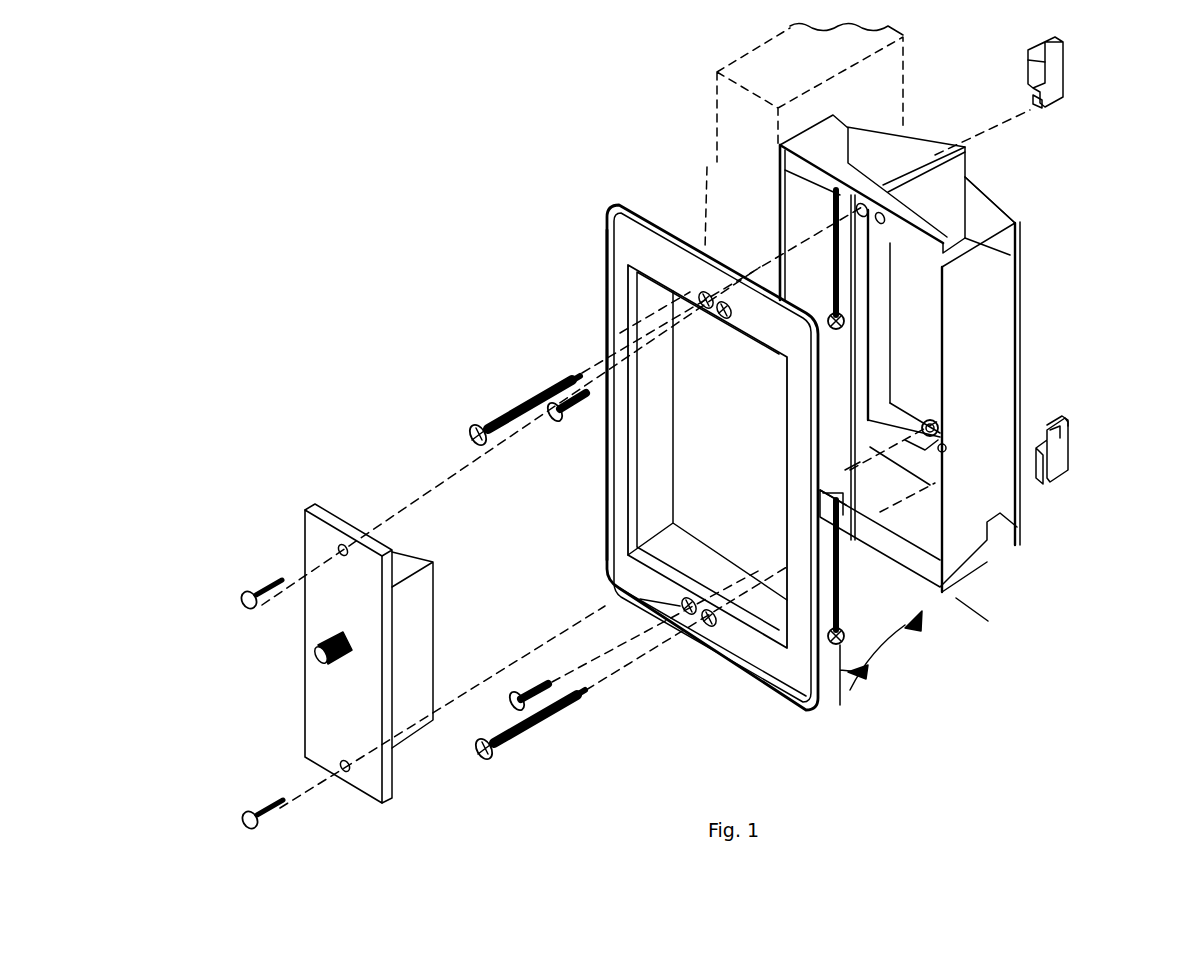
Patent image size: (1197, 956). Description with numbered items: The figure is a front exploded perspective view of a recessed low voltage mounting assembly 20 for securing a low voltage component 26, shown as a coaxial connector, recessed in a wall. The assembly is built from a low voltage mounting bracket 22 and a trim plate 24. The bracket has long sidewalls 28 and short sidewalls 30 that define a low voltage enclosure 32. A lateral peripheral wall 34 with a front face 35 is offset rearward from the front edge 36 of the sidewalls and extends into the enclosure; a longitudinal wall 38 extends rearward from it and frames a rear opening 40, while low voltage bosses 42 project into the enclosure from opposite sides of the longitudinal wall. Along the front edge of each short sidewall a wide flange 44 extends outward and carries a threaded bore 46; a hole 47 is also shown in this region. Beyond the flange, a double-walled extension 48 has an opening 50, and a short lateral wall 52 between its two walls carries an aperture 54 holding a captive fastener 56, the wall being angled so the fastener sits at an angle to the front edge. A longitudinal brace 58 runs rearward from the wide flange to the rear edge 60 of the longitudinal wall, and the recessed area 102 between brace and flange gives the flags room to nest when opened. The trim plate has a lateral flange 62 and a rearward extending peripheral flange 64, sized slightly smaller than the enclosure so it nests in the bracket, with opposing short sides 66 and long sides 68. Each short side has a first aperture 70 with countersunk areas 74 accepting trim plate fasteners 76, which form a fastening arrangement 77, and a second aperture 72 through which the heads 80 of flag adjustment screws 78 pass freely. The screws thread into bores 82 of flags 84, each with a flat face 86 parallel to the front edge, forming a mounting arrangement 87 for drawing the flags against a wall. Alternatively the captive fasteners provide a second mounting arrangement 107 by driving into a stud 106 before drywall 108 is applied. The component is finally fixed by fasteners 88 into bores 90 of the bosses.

The recessed low voltage mounting assembly 20 is at (562, 136).
The low voltage mounting bracket 22 is at (1000, 545).
The trim plate 24 is at (815, 712).
The low voltage component 26 is at (352, 520).
The long sidewalls 28 is at (998, 366).
The short sidewalls 30 is at (967, 215).
The low voltage enclosure 32 is at (920, 350).
The lateral peripheral wall 34 is at (905, 440).
The front face 35 is at (872, 432).
The front edge 36 is at (945, 482).
The longitudinal wall 38 is at (880, 285).
The rear opening 40 is at (928, 336).
The low voltage bosses 42 is at (928, 420).
The wide flange 44 is at (935, 237).
The threaded bore 46 is at (1018, 230).
The mounting hole 47 is at (866, 203).
The double-walled extension 48 is at (839, 158).
The opening 50 is at (785, 170).
The short lateral wall 52 is at (790, 185).
The aperture 54 is at (800, 197).
The captive fastener 56 is at (832, 240).
The longitudinal brace 58 is at (950, 182).
The rear edge 60 is at (1015, 210).
The lateral flange 62 is at (784, 341).
The rearward extending peripheral flange 64 is at (670, 439).
The short sides 66 is at (748, 692).
The long sides 68 is at (612, 341).
The first aperture 70 is at (720, 318).
The second aperture 72 is at (702, 308).
The countersunk areas 74 is at (640, 599).
The trim plate fasteners 76 is at (578, 406).
The fastening arrangement 77 is at (558, 432).
The flag adjustment screws 78 is at (520, 410).
The heads 80 is at (470, 430).
The bores 82 is at (1043, 106).
The flags 84 is at (1060, 68).
The flat face 86 is at (1028, 72).
The mounting arrangement 87 is at (1014, 56).
The fasteners 88 is at (258, 590).
The bores 90 is at (946, 452).
The recessed area 102 is at (868, 152).
The stud 106 is at (886, 103).
The second mounting arrangement 107 is at (846, 594).
The drywall 108 is at (756, 236).